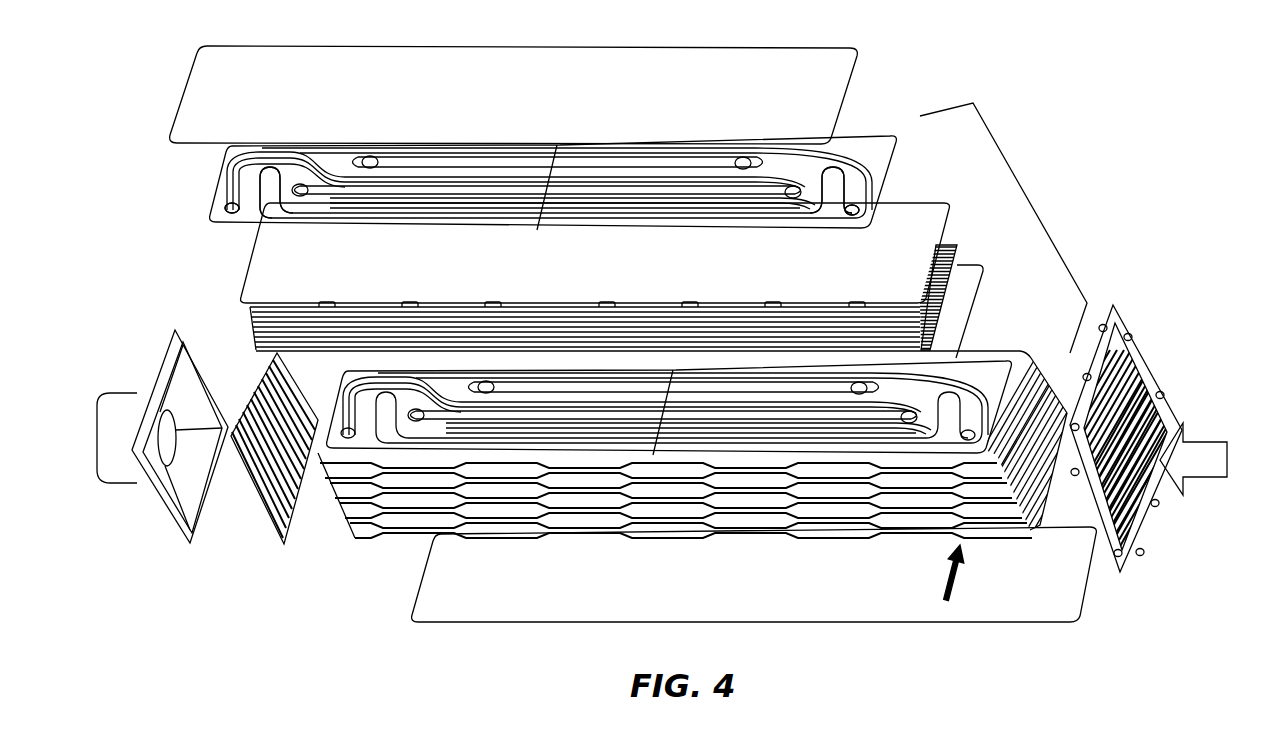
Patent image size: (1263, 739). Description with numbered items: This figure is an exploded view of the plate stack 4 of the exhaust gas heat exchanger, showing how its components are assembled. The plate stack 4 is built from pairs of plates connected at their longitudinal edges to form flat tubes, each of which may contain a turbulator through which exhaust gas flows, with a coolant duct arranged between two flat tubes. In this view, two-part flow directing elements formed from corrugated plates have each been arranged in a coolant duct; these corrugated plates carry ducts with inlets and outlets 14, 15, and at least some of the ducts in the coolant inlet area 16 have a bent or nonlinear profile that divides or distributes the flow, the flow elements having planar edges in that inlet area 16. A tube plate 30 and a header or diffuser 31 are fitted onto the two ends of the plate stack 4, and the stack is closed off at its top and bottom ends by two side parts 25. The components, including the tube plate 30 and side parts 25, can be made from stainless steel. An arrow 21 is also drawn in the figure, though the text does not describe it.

The plate stack 4 is at (1028, 200).
The inlet 14 is at (853, 214).
The outlet 15 is at (236, 205).
The coolant inlet area 16 is at (912, 166).
The air flow 21 is at (1205, 440).
The side part 25 is at (823, 62).
The tube plate 30 is at (270, 527).
The header or diffuser 31 is at (165, 498).